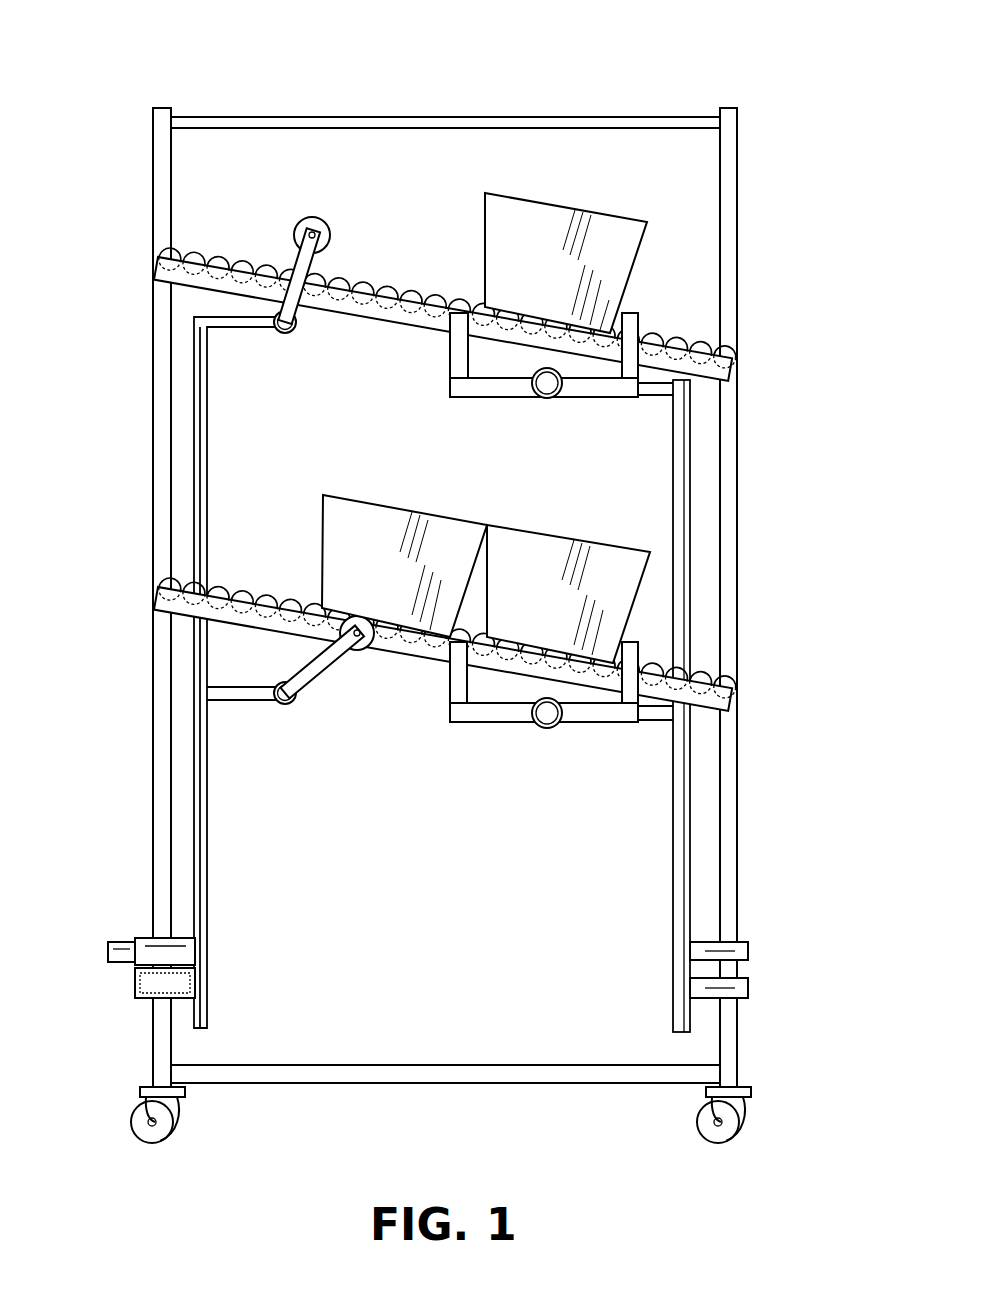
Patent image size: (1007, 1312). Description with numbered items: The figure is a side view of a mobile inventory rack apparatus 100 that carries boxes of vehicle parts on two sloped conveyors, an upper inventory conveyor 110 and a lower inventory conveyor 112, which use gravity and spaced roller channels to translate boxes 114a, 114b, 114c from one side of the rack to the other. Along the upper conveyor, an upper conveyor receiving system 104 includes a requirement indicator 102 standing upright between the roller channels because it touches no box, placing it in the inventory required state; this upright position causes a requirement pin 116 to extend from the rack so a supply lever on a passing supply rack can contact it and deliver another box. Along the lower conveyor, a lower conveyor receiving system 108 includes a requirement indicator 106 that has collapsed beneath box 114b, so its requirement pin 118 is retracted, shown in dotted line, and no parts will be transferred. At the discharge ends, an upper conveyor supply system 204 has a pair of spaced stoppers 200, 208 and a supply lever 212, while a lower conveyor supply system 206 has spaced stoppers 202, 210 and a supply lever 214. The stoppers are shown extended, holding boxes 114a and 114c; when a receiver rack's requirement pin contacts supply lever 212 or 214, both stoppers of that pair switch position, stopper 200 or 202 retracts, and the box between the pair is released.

The mobile inventory rack apparatus 100 is at (465, 571).
The requirement indicator 102 is at (307, 263).
The upper conveyor receiving system 104 is at (295, 339).
The requirement indicator 106 is at (330, 664).
The lower conveyor receiving system 108 is at (284, 714).
The upper inventory conveyor 110 is at (247, 268).
The lower inventory conveyor 112 is at (233, 624).
The box 114a is at (567, 212).
The box 114b is at (340, 497).
The box 114c is at (582, 540).
The requirement pin 116 is at (123, 948).
The requirement pin 118 is at (177, 973).
The stopper 200 is at (584, 348).
The stopper 202 is at (598, 691).
The upper conveyor supply system 204 is at (545, 443).
The lower conveyor supply system 206 is at (526, 766).
The stopper 208 is at (457, 348).
The stopper 210 is at (458, 680).
The supply lever 212 is at (727, 947).
The supply lever 214 is at (741, 986).